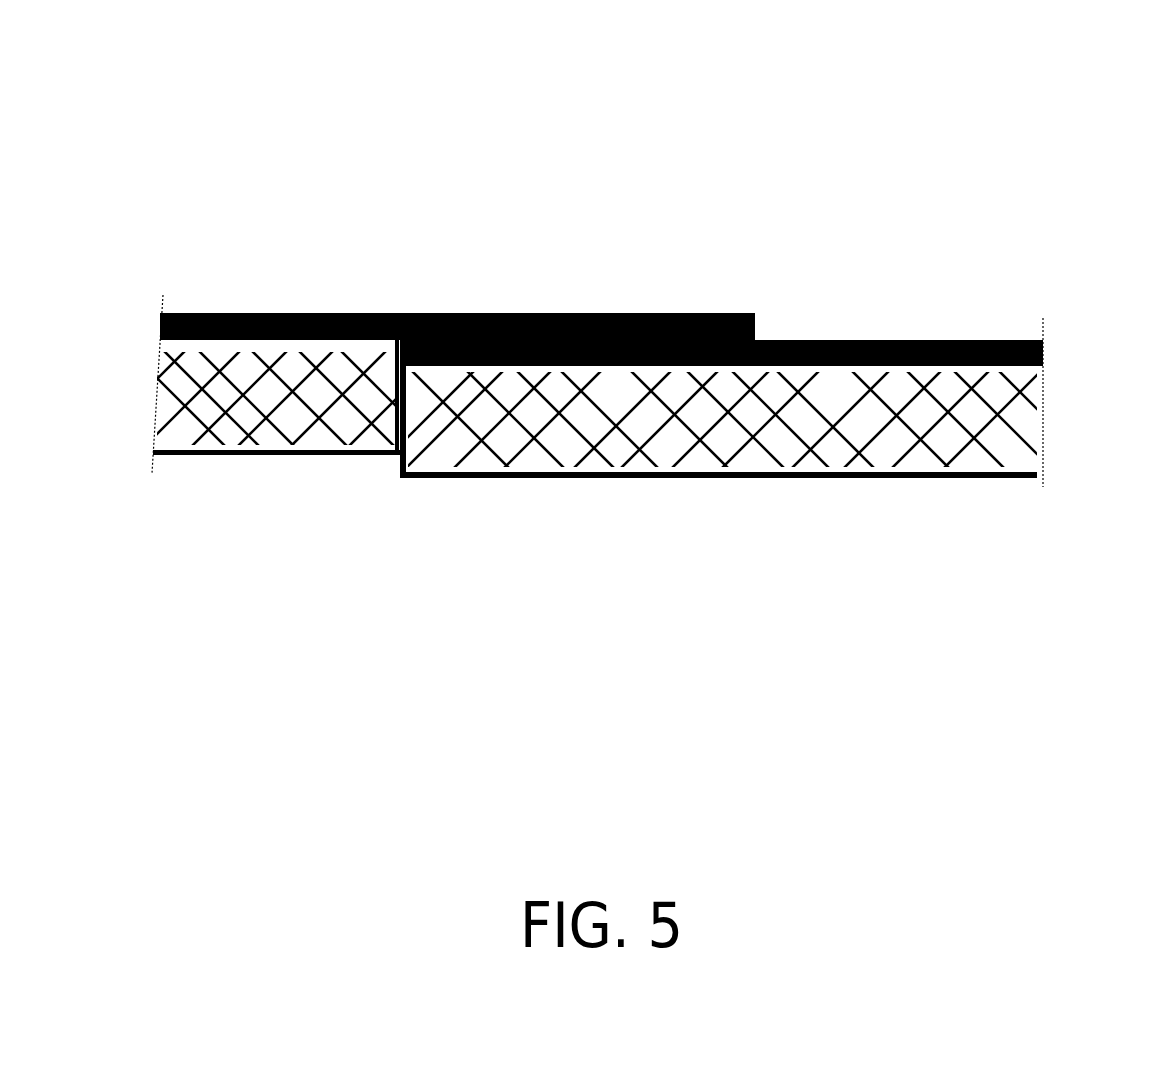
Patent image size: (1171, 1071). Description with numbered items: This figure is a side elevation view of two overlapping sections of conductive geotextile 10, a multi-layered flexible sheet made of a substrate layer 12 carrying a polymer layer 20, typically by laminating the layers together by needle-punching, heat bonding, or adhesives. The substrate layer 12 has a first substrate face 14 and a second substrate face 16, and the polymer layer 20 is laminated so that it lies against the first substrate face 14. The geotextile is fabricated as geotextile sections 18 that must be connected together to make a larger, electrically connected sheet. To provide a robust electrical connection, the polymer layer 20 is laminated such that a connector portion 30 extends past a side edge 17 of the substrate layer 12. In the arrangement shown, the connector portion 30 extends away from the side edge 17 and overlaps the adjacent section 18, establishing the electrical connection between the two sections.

The conductive geotextile 10 is at (190, 164).
The substrate layer 12 is at (203, 430).
The first substrate face 14 is at (753, 531).
The second substrate face 16 is at (790, 475).
The side edge 17 is at (400, 477).
The geotextile section 18 is at (997, 438).
The polymer layer 20 is at (295, 313).
The connector portion 30 is at (603, 313).